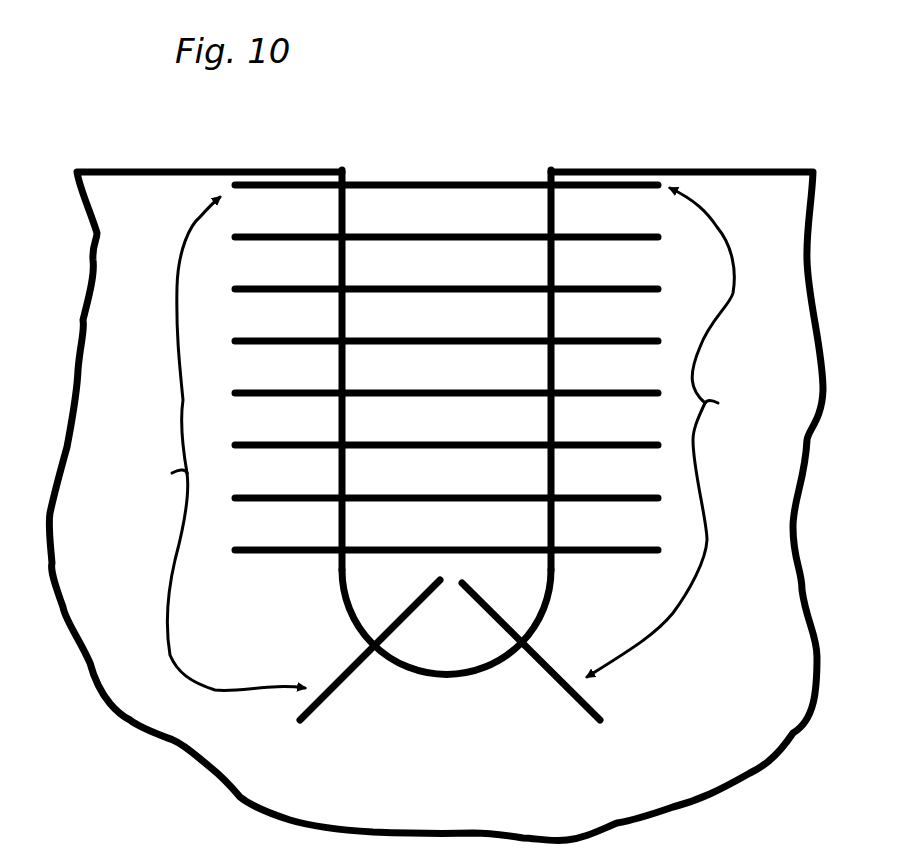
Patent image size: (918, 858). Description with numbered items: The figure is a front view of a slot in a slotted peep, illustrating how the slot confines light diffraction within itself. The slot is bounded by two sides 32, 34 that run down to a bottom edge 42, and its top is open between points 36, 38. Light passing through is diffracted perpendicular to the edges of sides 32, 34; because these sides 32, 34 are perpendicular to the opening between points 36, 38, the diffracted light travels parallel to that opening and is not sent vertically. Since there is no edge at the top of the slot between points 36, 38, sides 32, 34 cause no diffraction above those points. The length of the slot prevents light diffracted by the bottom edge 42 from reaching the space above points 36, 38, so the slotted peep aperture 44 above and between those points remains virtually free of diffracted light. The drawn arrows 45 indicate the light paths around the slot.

The side 32 is at (333, 367).
The side 34 is at (558, 367).
The point 36 is at (350, 166).
The point 38 is at (546, 166).
The bottom edge 42 is at (471, 685).
The slotted peep aperture 44 is at (436, 451).
The flow direction arrows 45 is at (440, 439).